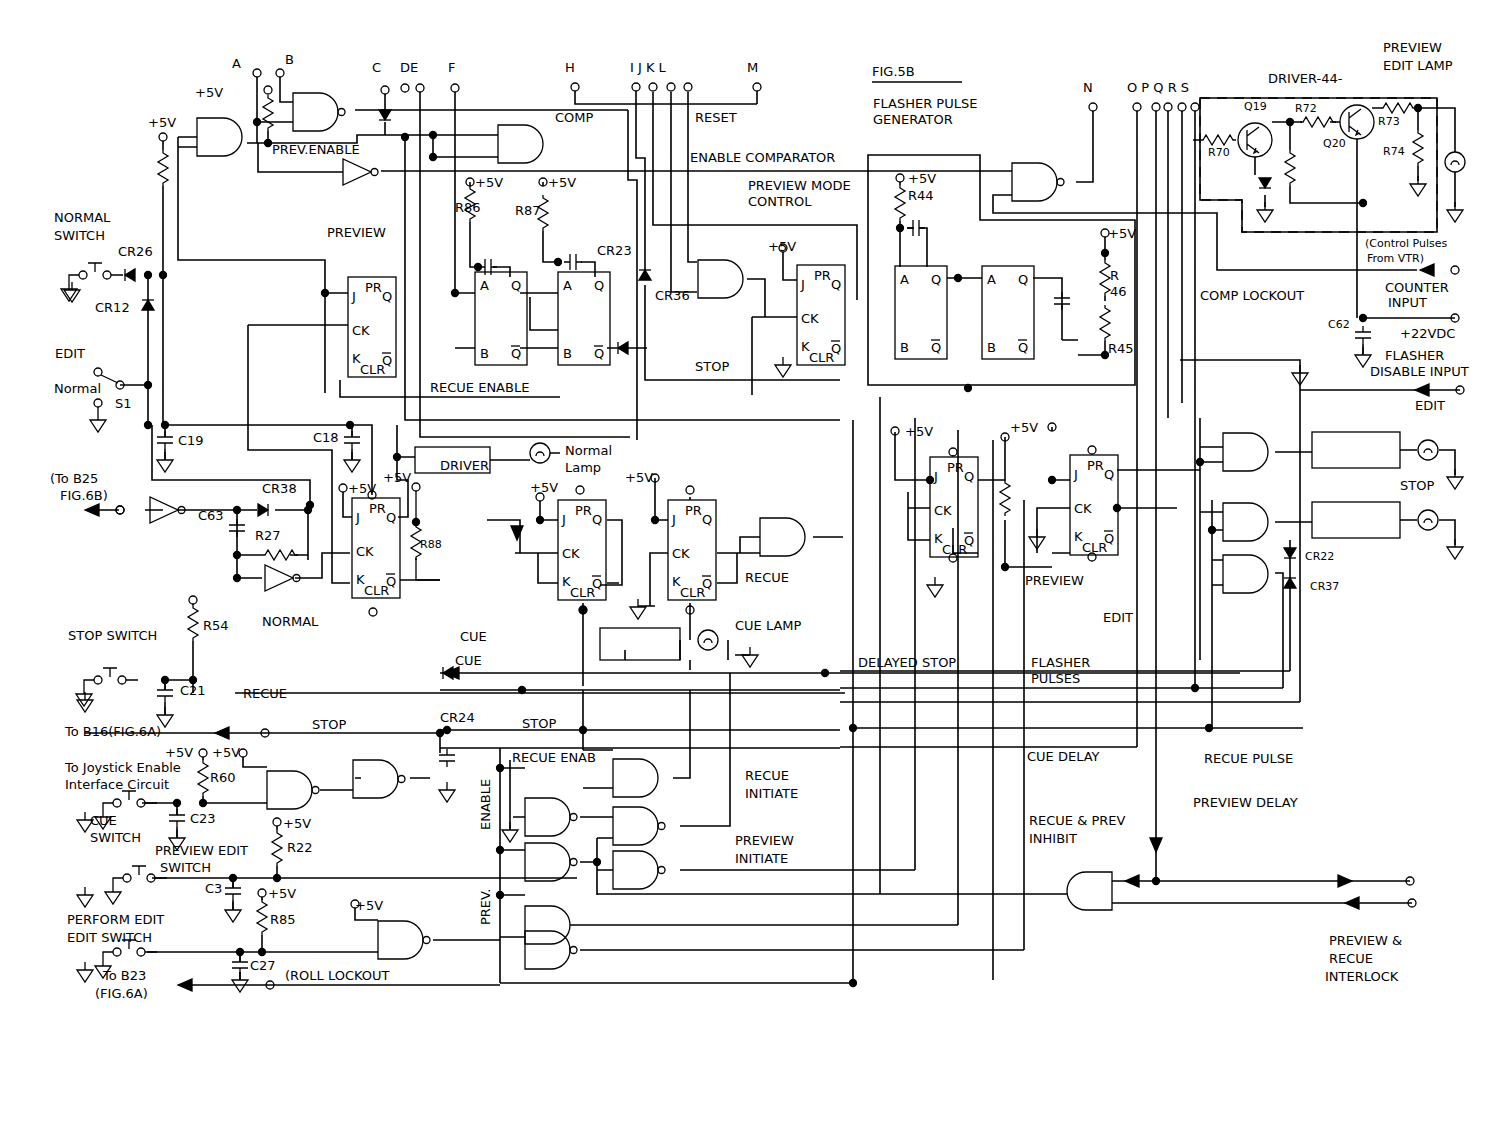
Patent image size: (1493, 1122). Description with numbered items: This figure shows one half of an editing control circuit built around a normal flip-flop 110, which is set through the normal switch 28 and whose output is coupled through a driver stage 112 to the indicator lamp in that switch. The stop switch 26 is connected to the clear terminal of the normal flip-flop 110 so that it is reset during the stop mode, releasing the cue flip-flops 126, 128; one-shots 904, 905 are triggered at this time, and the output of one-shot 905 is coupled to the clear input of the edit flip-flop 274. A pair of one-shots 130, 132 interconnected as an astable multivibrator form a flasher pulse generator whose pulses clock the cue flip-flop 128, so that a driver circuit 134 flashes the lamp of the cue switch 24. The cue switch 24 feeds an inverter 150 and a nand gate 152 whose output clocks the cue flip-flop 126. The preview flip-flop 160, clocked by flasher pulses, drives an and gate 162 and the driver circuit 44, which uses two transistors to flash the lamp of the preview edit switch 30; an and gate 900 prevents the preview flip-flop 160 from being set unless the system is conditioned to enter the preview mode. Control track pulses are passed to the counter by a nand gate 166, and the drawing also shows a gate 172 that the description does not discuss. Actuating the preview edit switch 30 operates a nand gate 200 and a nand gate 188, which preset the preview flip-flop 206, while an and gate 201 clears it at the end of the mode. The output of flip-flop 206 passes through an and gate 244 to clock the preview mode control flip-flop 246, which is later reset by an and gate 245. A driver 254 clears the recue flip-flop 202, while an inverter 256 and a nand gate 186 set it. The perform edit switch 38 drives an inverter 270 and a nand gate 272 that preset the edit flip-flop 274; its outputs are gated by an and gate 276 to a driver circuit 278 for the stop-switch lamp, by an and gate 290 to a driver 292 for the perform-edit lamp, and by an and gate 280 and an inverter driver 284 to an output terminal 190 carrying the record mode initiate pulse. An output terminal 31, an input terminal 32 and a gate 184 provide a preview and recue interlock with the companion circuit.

The NAND gate 172 is at (312, 100).
The and gate 900 is at (226, 122).
The and gate 162 is at (528, 126).
The nand gate 166 is at (1049, 156).
The cue flip-flop 126 is at (360, 180).
The preview flip-flop 160 is at (362, 368).
The one-shot 904 is at (508, 366).
The one-shot 905 is at (610, 346).
The and gate 245 is at (740, 240).
The preview mode control flip-flop 246 is at (829, 360).
The one-shot 130 is at (920, 370).
The one-shot 132 is at (985, 268).
The driver circuit 44 is at (1318, 165).
The normal switch 28 is at (106, 262).
The normal flip-flop 110 is at (390, 607).
The driver stage 112 is at (462, 472).
The cue flip-flop 128 is at (584, 502).
The recue flip-flop 202 is at (672, 493).
The and gate 244 is at (803, 505).
The driver circuit 134 is at (644, 630).
The preview flip-flop 206 is at (1000, 448).
The edit flip-flop 274 is at (1113, 455).
The and gate 276 is at (1258, 418).
The driver circuit 278 is at (1362, 416).
The and gate 290 is at (1245, 486).
The driver 292 is at (1346, 538).
The and gate 280 is at (1250, 583).
The inverter driver 284 is at (171, 528).
The output terminal 190 is at (118, 514).
The stop switch 26 is at (124, 666).
The inverter 150 is at (318, 752).
The nand gate 152 is at (374, 793).
The cue switch 24 is at (138, 821).
The preview edit switch 30 is at (148, 860).
The perform edit switch 38 is at (148, 940).
The inverter 270 is at (416, 952).
The driver 254 is at (664, 780).
The inverter 256 is at (576, 785).
The nand gate 186 is at (670, 832).
The nand gate 200 is at (508, 862).
The nand gate 188 is at (678, 874).
The and gate 201 is at (578, 918).
The nand gate 272 is at (582, 964).
The gate 184 is at (1092, 908).
The output terminal 31 is at (1416, 874).
The input terminal 32 is at (1415, 909).